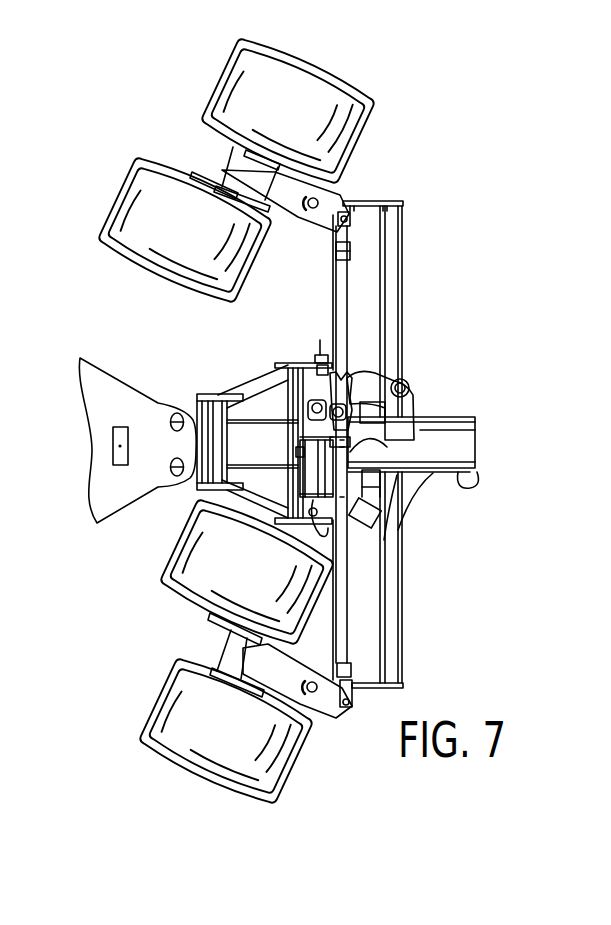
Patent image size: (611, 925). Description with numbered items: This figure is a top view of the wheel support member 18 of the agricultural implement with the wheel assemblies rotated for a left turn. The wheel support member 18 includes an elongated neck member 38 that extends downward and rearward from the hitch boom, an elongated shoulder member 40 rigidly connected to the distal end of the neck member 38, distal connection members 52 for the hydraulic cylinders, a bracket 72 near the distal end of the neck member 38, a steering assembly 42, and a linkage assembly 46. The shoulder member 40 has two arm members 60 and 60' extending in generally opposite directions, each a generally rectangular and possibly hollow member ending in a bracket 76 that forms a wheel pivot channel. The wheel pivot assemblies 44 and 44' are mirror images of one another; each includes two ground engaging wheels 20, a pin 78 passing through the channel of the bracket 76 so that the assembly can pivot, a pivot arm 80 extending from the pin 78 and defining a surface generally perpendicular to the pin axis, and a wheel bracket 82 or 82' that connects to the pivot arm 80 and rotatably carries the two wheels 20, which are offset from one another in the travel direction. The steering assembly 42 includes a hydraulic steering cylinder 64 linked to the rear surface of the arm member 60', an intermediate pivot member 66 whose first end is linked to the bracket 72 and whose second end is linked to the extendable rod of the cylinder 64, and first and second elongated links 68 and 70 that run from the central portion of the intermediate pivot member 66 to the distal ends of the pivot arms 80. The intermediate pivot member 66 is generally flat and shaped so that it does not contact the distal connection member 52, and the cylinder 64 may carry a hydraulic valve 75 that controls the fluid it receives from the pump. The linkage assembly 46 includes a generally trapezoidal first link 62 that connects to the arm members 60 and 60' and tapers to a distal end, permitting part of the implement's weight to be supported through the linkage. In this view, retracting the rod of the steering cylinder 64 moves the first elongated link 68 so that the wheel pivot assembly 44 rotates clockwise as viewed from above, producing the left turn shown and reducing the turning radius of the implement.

The wheel support member 18 is at (480, 398).
The ground engaging wheels 20 is at (121, 173).
The elongated neck member 38 is at (460, 480).
The elongated shoulder member 40 is at (414, 553).
The steering assembly 42 is at (306, 482).
The wheel pivot assembly 44 is at (285, 251).
The wheel pivot assembly 44' is at (319, 734).
The linkage assembly 46 is at (254, 362).
The distal connection member 52 is at (470, 444).
The arm member 60 is at (447, 309).
The arm member 60' is at (437, 577).
The first link 62 is at (240, 392).
The hydraulic steering cylinder 64 is at (306, 455).
The intermediate pivot member 66 is at (365, 375).
The first elongated link 68 is at (343, 292).
The second elongated link 70 is at (343, 575).
The bracket 72 is at (418, 393).
The hydraulic valve 75 is at (383, 522).
The bracket 76 is at (347, 229).
The pin 78 is at (347, 204).
The pivot arm 80 is at (347, 206).
The wheel bracket 82 is at (210, 161).
The wheel bracket 82' is at (203, 655).